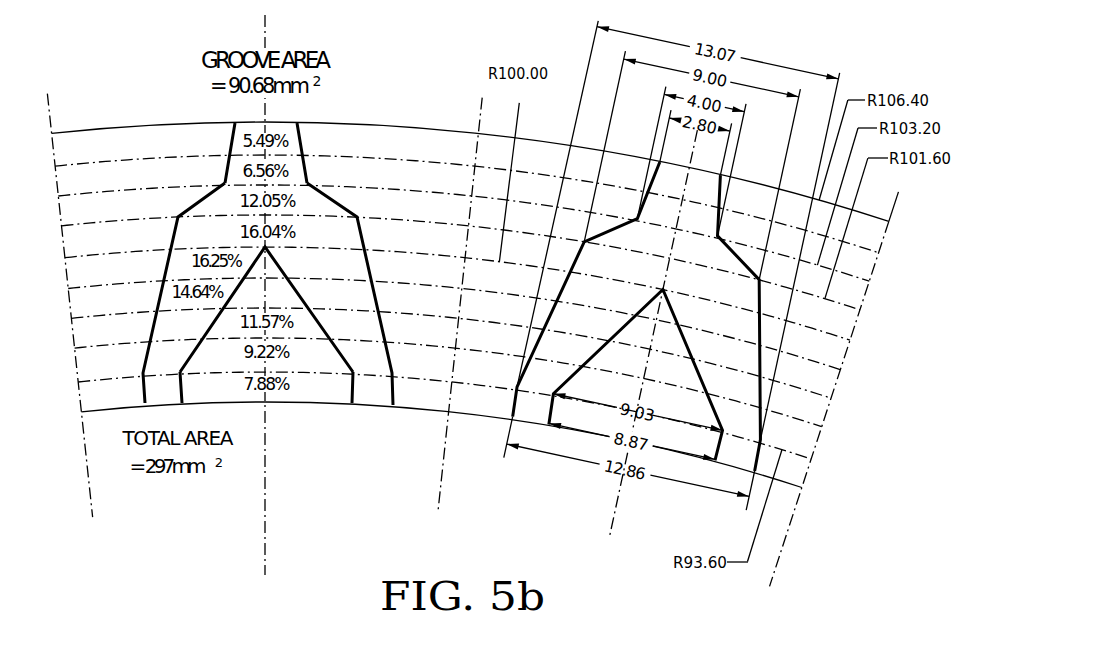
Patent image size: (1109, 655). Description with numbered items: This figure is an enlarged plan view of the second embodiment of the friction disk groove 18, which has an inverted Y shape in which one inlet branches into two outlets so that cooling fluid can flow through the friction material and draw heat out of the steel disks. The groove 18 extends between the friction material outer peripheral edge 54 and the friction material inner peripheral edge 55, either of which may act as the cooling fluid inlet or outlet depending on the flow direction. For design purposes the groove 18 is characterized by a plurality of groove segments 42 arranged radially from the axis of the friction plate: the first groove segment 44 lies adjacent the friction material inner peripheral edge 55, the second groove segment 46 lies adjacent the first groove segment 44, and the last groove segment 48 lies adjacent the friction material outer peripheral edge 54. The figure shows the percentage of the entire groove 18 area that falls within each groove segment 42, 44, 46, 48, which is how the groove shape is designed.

The groove 18 is at (470, 317).
The groove segments 42 is at (173, 237).
The first groove segment 44 is at (144, 393).
The second groove segment 46 is at (148, 352).
The last groove segment 48 is at (233, 137).
The friction material outer peripheral edge 54 is at (215, 122).
The friction material inner peripheral edge 55 is at (372, 407).